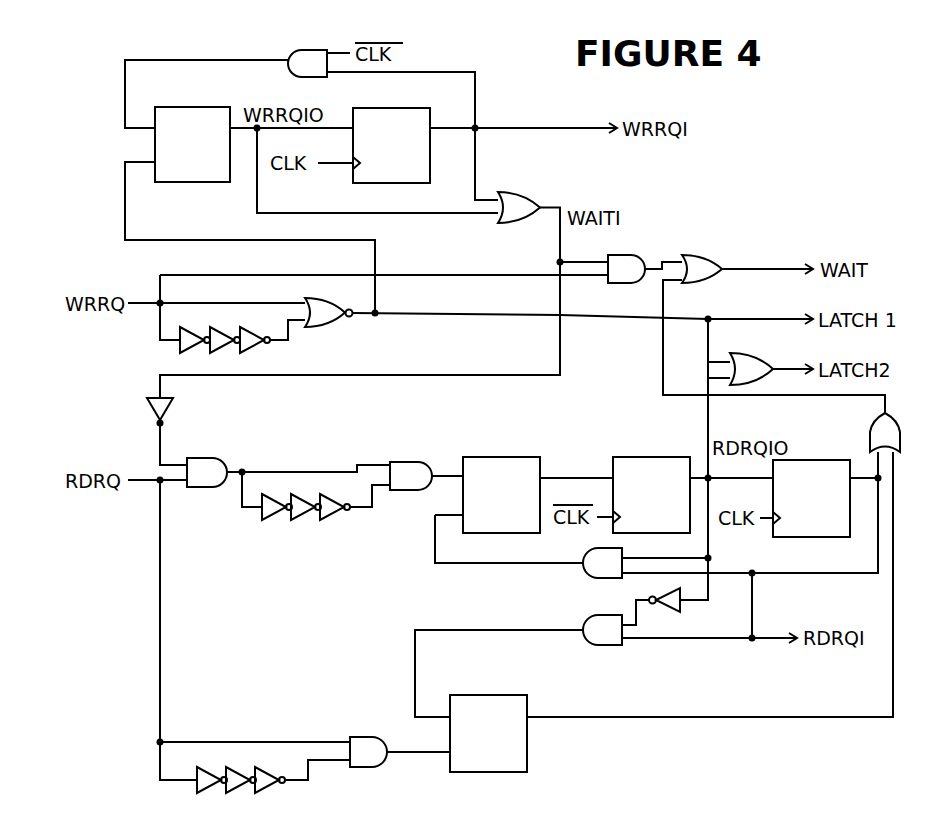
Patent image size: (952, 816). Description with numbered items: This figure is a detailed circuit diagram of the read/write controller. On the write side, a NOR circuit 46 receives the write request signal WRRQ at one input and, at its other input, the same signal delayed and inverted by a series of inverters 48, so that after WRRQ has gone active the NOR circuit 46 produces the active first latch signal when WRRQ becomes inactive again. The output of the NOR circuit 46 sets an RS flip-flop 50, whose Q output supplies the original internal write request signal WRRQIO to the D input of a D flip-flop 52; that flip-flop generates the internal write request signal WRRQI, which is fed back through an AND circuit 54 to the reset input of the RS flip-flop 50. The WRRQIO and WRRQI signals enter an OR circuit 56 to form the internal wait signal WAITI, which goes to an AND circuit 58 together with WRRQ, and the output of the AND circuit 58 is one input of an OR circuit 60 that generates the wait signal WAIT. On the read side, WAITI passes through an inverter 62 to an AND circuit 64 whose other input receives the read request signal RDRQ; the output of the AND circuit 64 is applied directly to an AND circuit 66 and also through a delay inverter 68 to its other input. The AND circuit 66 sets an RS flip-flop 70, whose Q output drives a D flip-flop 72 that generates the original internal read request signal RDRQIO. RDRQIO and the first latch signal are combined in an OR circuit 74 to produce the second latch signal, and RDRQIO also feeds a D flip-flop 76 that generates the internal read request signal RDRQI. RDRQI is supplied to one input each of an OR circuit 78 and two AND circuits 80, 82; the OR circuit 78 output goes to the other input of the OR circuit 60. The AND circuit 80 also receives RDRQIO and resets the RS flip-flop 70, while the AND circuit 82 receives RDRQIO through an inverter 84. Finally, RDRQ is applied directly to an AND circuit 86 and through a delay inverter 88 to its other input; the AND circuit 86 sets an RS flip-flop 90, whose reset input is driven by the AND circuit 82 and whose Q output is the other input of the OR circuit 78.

The NOR circuit 46 is at (325, 327).
The series of inverters 48 is at (256, 350).
The RS flip-flop 50 is at (190, 182).
The D flip-flop 52 is at (395, 108).
The AND circuit 54 is at (292, 52).
The OR circuit 56 is at (530, 192).
The AND circuit 58 is at (626, 255).
The OR circuit 60 is at (708, 255).
The inverter 62 is at (167, 408).
The AND circuit 64 is at (210, 487).
The AND circuit 66 is at (408, 462).
The delay inverter 68 is at (308, 518).
The RS flip-flop 70 is at (505, 457).
The D flip-flop 72 is at (655, 457).
The OR circuit 74 is at (748, 355).
The D flip-flop 76 is at (818, 460).
The OR circuit 78 is at (900, 440).
The AND circuit 80 is at (598, 578).
The AND circuit 82 is at (602, 645).
The inverter 84 is at (674, 612).
The AND circuit 86 is at (368, 737).
The delay inverter 88 is at (210, 767).
The RS flip-flop 90 is at (478, 695).